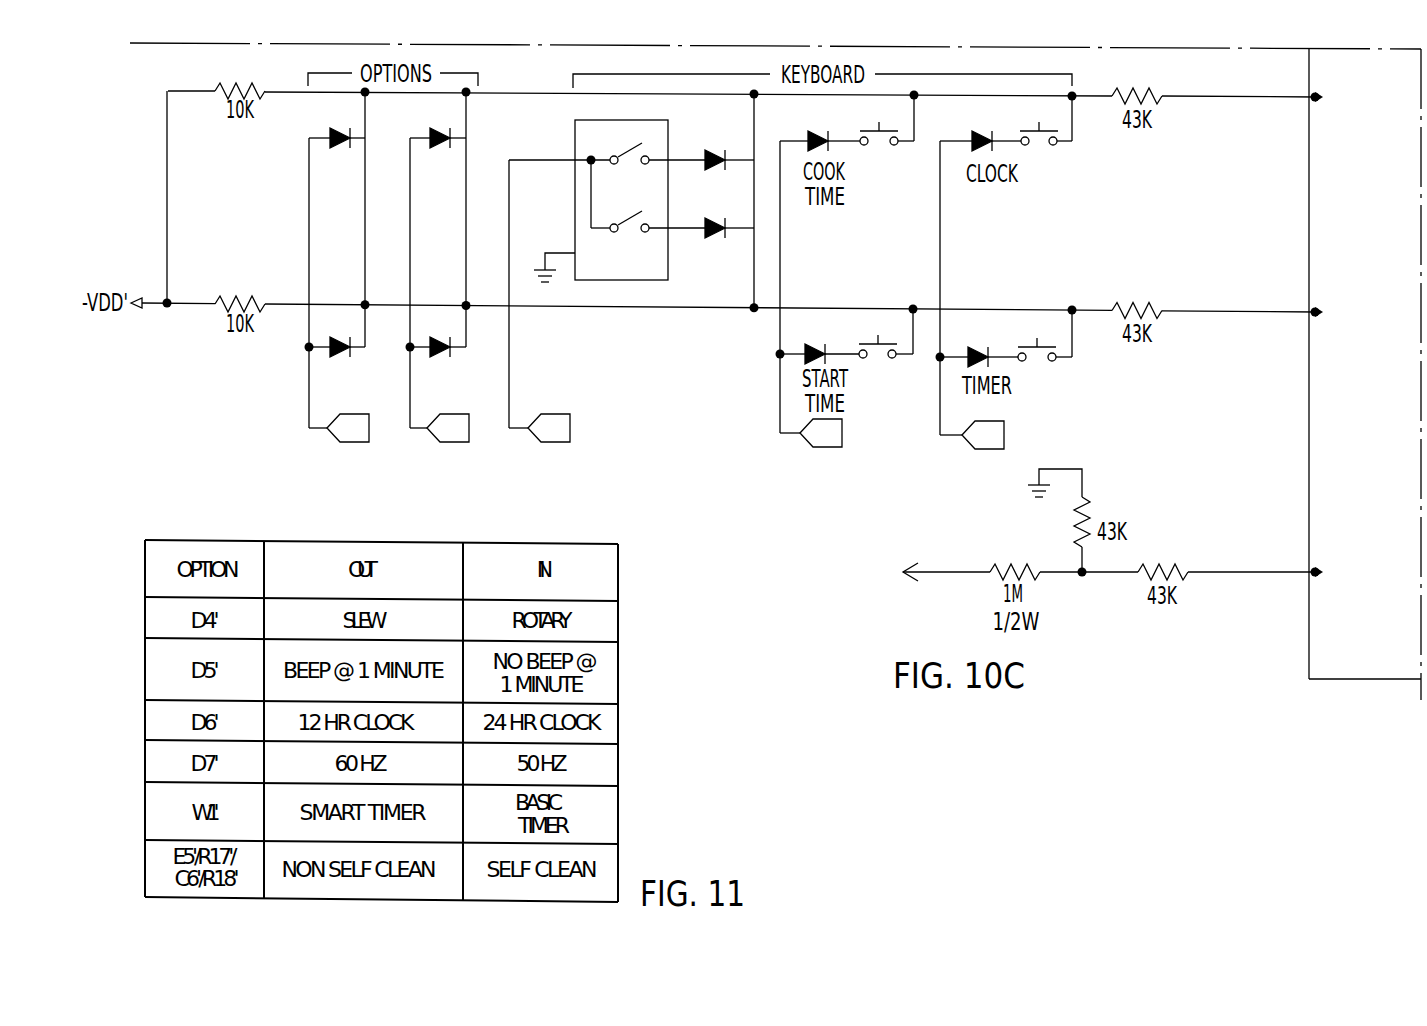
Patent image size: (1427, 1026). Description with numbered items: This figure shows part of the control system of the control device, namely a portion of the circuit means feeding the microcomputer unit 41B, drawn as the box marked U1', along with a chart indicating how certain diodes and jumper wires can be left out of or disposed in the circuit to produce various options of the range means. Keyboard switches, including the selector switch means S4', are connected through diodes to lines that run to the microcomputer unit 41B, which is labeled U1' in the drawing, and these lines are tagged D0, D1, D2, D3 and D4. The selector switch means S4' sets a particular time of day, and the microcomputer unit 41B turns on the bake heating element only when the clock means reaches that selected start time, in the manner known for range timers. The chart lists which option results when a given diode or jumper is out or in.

The microcomputer unit 41B is at (1309, 400).
The microcontroller U1' is at (1365, 696).
The selector switch means S4' is at (886, 336).
The timer input line D0 is at (972, 296).
The option input line D1 is at (439, 291).
The start time input line D2 is at (811, 295).
The selector switch input line D3 is at (539, 302).
The option input line D4 is at (339, 291).